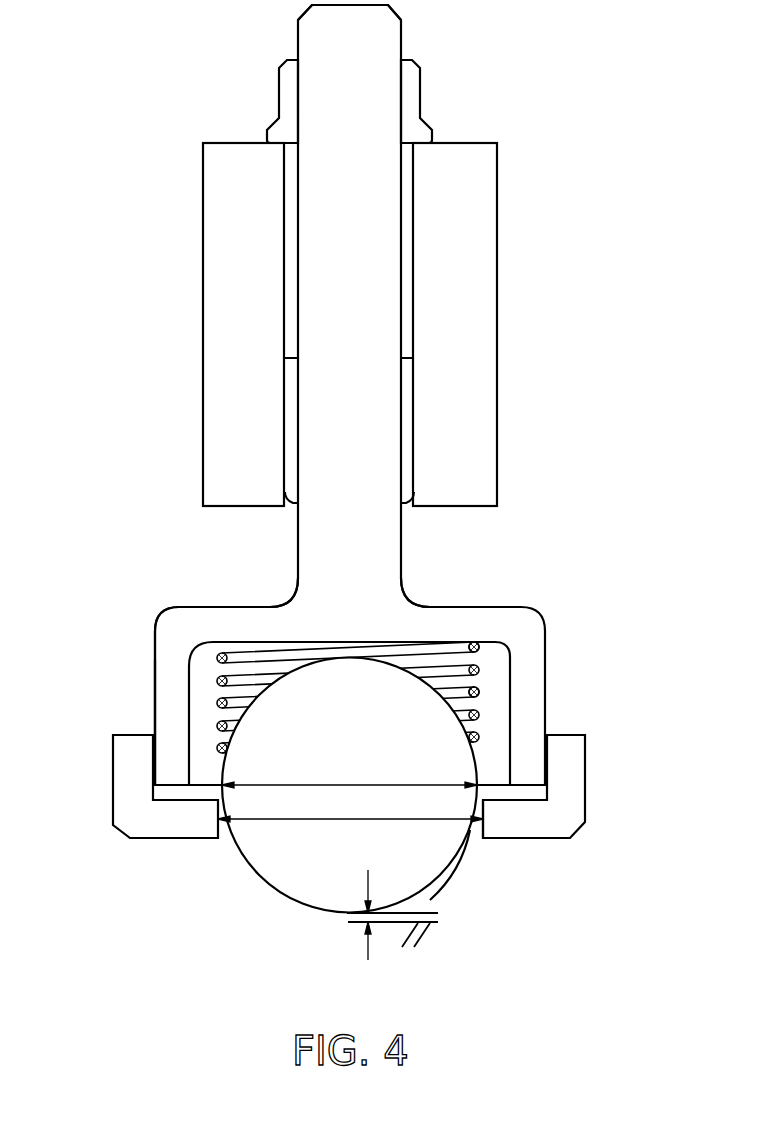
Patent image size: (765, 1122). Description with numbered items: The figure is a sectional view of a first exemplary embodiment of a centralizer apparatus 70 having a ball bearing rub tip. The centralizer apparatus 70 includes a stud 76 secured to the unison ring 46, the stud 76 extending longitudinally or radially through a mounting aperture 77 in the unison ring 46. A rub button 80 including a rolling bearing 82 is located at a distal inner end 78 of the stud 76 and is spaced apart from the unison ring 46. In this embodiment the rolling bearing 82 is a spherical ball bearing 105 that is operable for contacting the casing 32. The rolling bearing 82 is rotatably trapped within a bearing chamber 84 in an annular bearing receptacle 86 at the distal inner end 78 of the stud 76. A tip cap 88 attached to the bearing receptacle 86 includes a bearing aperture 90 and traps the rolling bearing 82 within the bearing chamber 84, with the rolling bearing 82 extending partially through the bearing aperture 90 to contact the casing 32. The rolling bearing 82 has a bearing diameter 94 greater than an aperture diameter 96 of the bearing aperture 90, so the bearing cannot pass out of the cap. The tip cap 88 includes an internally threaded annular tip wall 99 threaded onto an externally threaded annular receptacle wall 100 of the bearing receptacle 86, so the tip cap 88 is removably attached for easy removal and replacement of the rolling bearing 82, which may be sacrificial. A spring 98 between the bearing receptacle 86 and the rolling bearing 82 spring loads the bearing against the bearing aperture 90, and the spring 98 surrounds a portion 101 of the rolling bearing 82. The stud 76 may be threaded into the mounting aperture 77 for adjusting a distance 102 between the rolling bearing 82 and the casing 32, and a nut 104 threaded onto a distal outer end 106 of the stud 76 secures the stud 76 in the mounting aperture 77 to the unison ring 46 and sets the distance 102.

The casing 32 is at (425, 933).
The unison ring 46 is at (497, 205).
The centralizer apparatus 70 is at (150, 933).
The stud 76 is at (401, 553).
The mounting aperture 77 is at (413, 178).
The distal inner end 78 is at (410, 598).
The rub button 80 is at (241, 853).
The rolling bearing 82 is at (452, 863).
The bearing chamber 84 is at (490, 690).
The bearing receptacle 86 is at (154, 652).
The tip cap 88 is at (580, 780).
The bearing aperture 90 is at (473, 831).
The bearing diameter 94 is at (345, 822).
The aperture diameter 96 is at (345, 783).
The spring 98 is at (479, 648).
The internally threaded annular tip wall 99 is at (113, 780).
The externally threaded annular receptacle wall 100 is at (154, 705).
The portion of the rolling bearing 101 is at (453, 708).
The distance 102 is at (368, 958).
The nut 104 is at (279, 88).
The ball bearing 105 is at (450, 860).
The distal outer end 106 is at (401, 33).